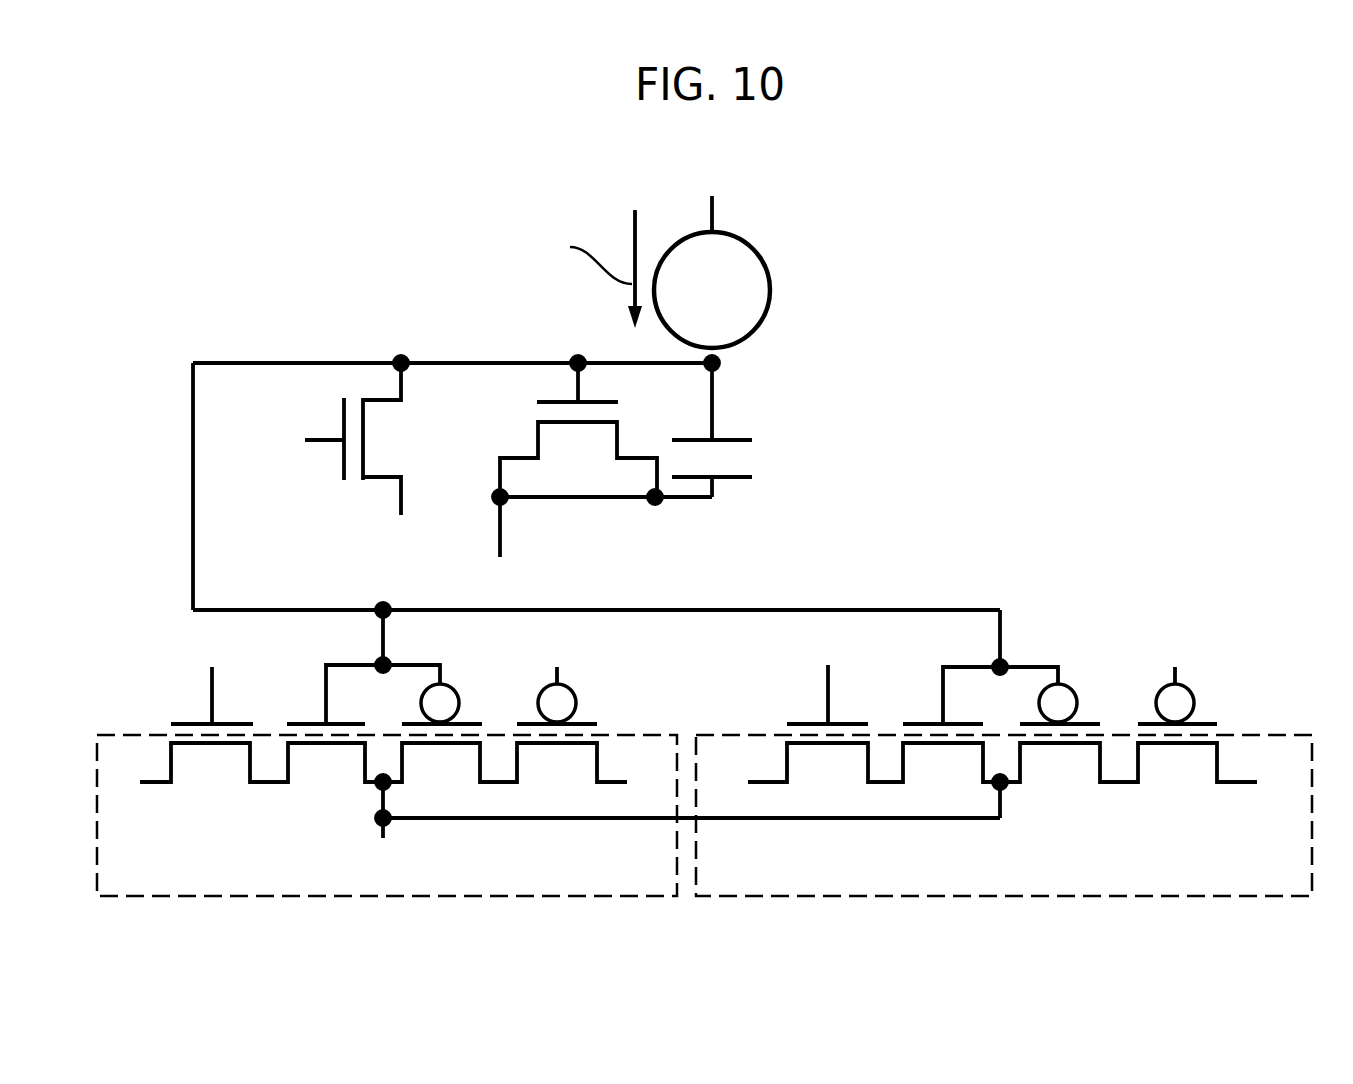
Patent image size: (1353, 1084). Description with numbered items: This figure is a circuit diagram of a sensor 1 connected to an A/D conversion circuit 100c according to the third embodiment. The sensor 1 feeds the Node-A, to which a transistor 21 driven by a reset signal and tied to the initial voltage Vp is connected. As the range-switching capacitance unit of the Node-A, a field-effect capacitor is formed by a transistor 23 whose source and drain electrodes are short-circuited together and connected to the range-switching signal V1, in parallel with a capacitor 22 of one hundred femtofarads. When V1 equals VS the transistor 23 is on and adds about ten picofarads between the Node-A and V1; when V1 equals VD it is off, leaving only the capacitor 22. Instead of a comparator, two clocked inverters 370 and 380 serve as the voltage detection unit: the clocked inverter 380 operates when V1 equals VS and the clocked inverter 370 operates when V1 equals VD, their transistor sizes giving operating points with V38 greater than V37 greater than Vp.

The sensor 1 is at (770, 270).
The transistor 21 is at (388, 437).
The capacitor 22 is at (770, 458).
The transistor 23 is at (582, 446).
The clocked inverter 370 is at (632, 735).
The clocked inverter 380 is at (738, 735).
The A/D conversion circuit 100c is at (1125, 298).